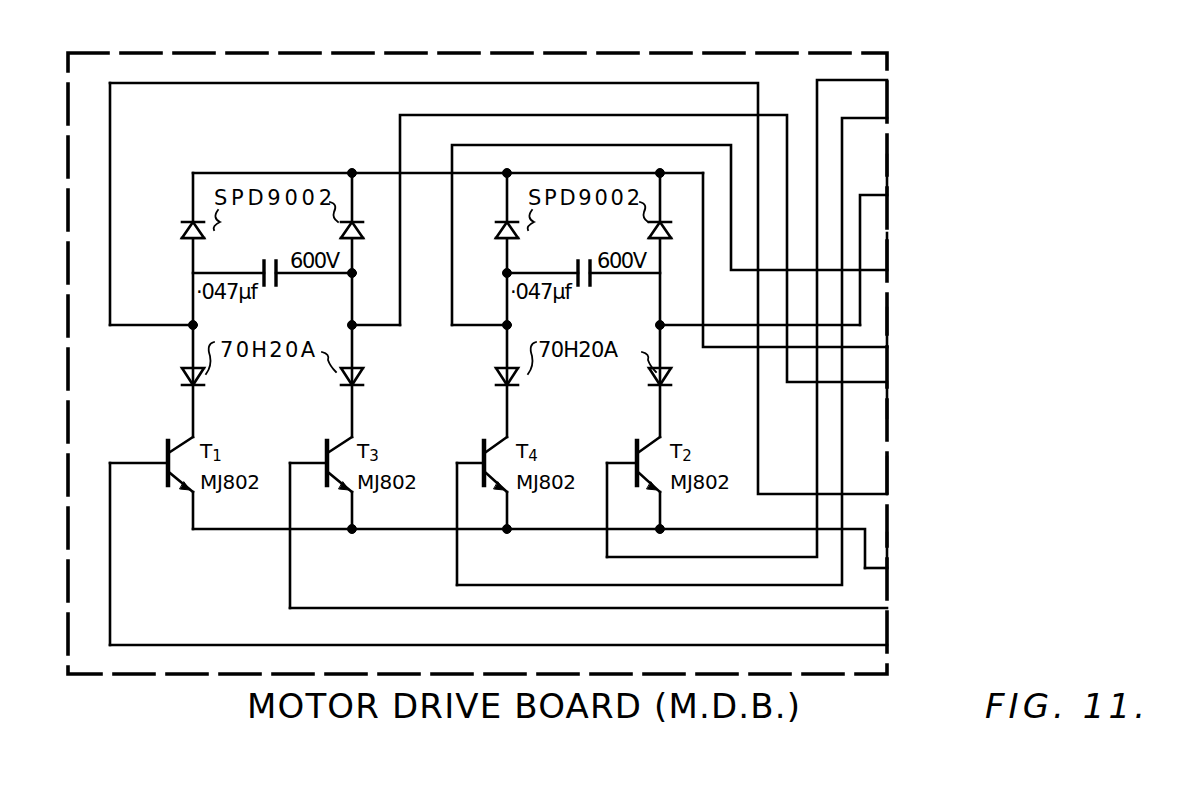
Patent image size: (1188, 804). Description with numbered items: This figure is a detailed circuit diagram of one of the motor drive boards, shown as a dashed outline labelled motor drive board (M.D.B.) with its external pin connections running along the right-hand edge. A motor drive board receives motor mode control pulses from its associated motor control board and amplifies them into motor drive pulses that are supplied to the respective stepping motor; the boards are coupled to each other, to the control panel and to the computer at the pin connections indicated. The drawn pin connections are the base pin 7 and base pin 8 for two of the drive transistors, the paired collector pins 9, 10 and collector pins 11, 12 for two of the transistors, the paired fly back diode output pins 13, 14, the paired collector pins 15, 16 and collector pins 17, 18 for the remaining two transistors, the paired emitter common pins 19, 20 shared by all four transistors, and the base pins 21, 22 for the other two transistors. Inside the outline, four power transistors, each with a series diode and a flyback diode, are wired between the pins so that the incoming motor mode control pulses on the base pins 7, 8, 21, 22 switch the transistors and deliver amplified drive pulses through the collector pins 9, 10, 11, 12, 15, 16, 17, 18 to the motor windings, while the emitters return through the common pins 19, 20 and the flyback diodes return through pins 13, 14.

The base T2 terminal 7 is at (829, 312).
The base T4 terminal 8 is at (754, 345).
The collector T2 terminal 9 is at (995, 168).
The collector T2 terminal 10 is at (893, 253).
The collector T4 terminal 11 is at (995, 245).
The collector T4 terminal 12 is at (689, 235).
The fly back diode out terminal 13 is at (1032, 321).
The fly back diode out terminal 14 is at (815, 268).
The collector T3 terminal 15 is at (753, 266).
The collector T3 terminal 16 is at (905, 419).
The collector T1 terminal 17 is at (995, 469).
The collector T1 terminal 18 is at (518, 296).
The emitter common terminal 19 is at (1012, 544).
The emitter common terminal 20 is at (896, 569).
The base T3 terminal 21 is at (671, 610).
The base T1 terminal 22 is at (581, 647).